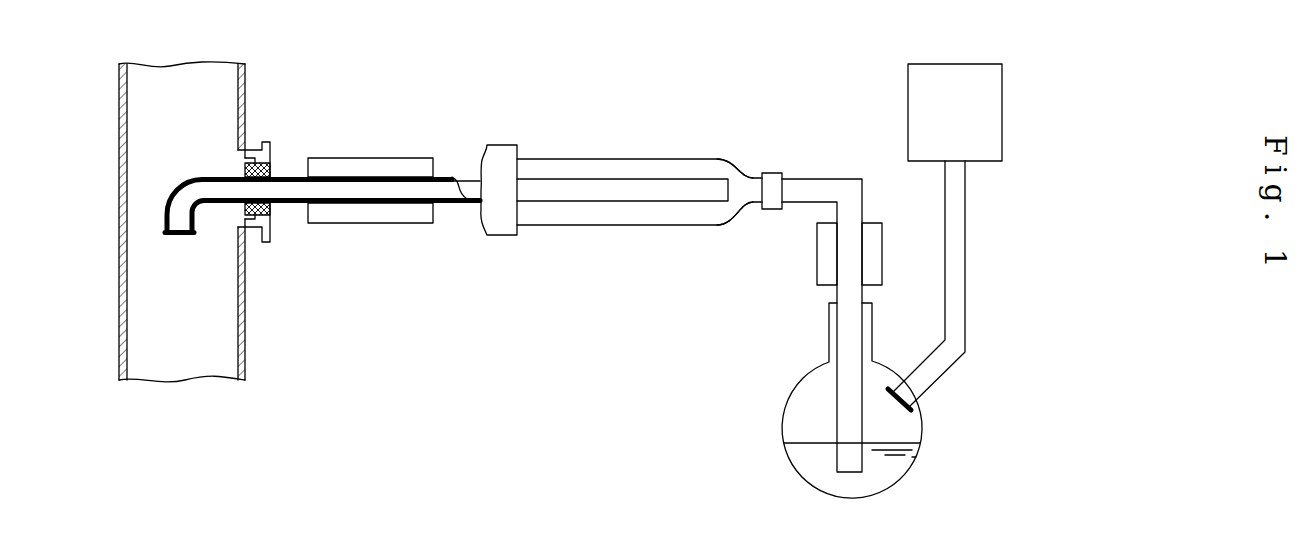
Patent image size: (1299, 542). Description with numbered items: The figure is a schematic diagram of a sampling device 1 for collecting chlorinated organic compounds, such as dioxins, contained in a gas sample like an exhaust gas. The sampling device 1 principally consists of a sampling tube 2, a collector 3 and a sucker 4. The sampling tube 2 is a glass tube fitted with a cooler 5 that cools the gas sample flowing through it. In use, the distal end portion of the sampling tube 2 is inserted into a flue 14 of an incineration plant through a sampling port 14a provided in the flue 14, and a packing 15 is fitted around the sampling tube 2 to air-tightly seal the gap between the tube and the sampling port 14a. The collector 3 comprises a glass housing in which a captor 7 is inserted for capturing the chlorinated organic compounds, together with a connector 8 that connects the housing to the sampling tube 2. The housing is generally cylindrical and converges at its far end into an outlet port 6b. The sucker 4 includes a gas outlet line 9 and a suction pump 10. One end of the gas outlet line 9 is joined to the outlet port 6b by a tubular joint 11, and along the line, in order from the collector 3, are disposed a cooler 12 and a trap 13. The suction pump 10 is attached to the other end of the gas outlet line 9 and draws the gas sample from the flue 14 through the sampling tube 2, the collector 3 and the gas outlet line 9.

The sampling device 1 is at (708, 112).
The sampling tube 2 is at (383, 190).
The collector 3 is at (621, 240).
The sucker 4 is at (990, 333).
The cooler 5 is at (392, 162).
The outlet port 6b is at (750, 198).
The captor 7 is at (582, 185).
The connector 8 is at (505, 220).
The gas outlet line 9 is at (857, 293).
The suction pump 10 is at (995, 115).
The tubular joint 11 is at (772, 180).
The cooler 12 is at (823, 254).
The trap 13 is at (915, 418).
The flue 14 is at (143, 322).
The sampling port 14a is at (272, 210).
The packing 15 is at (254, 156).